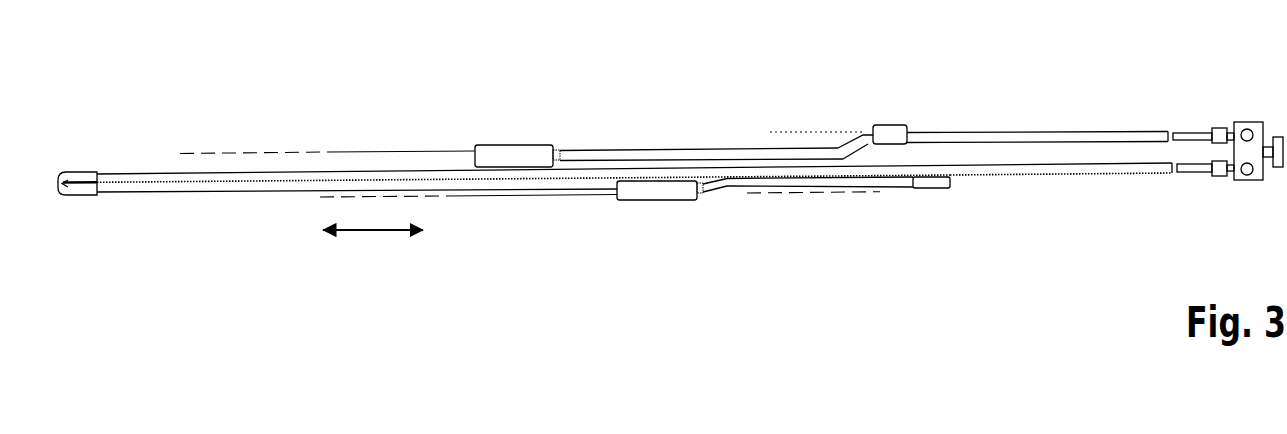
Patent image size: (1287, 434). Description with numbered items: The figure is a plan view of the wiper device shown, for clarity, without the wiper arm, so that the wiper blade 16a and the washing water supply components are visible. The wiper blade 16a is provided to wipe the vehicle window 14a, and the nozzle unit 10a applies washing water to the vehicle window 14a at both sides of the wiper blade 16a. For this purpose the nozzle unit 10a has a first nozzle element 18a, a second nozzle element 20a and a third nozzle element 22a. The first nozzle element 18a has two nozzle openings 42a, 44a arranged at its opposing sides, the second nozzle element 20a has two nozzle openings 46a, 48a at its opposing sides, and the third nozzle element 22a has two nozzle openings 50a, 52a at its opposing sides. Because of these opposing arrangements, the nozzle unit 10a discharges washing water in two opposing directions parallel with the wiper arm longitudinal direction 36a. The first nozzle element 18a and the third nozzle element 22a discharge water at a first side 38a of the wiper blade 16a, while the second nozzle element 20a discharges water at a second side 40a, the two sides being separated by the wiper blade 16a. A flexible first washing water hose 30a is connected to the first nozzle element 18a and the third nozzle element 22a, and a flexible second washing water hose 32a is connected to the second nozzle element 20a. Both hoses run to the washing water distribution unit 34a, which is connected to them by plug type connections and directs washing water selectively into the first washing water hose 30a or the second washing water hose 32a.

The nozzle unit 10a is at (518, 83).
The vehicle window 14a is at (362, 87).
The wiper blade 16a is at (270, 177).
The first nozzle element 18a is at (480, 146).
The second nozzle element 20a is at (631, 201).
The third nozzle element 22a is at (897, 125).
The first washing water hose 30a is at (1099, 131).
The second washing water hose 32a is at (1100, 175).
The washing water distribution unit 34a is at (1248, 113).
The wiper arm longitudinal direction 36a is at (377, 233).
The first side 38a is at (672, 82).
The second side 40a is at (683, 258).
The nozzle opening 42a is at (477, 147).
The nozzle opening 44a is at (562, 149).
The nozzle opening 46a is at (608, 201).
The nozzle opening 48a is at (708, 201).
The nozzle opening 50a is at (865, 131).
The nozzle opening 52a is at (912, 132).